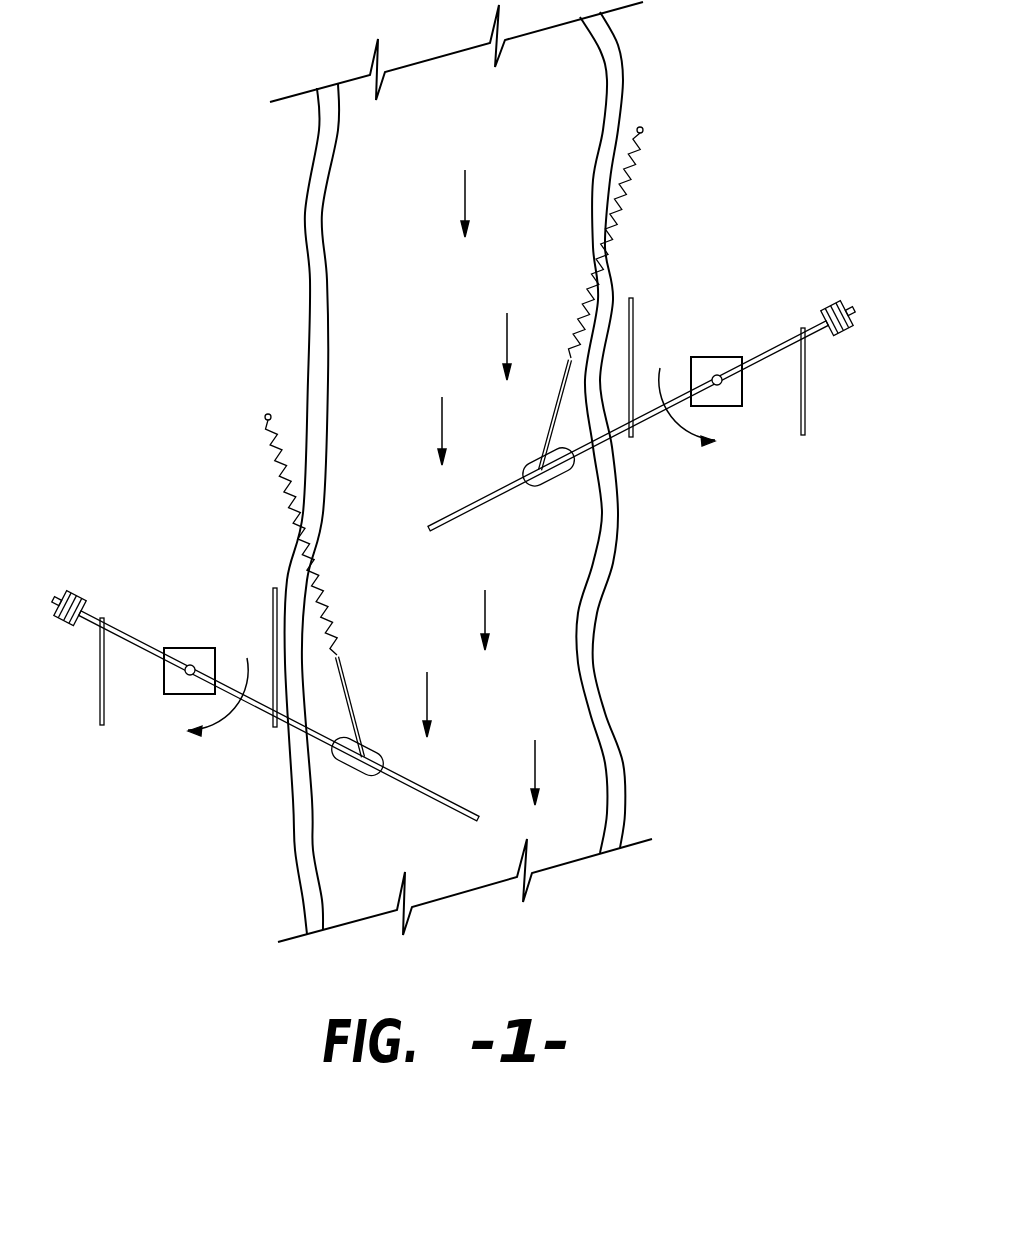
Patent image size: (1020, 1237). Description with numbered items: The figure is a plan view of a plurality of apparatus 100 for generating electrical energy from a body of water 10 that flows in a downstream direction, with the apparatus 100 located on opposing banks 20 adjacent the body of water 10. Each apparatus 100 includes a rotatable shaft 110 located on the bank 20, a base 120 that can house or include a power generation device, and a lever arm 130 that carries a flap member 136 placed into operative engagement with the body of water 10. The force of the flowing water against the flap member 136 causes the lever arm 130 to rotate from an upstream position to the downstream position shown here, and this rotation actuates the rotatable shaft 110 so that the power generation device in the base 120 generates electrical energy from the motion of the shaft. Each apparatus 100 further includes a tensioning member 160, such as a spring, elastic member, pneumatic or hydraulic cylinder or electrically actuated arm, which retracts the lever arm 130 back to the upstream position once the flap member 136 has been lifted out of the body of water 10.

The body of water 10 is at (382, 224).
The bank 20 is at (238, 257).
The apparatus 100 is at (454, 489).
The rotatable shaft 110 is at (713, 377).
The base 120 is at (733, 397).
The lever arm 130 is at (775, 345).
The flap member 136 is at (493, 503).
The tensioning member 160 is at (613, 215).